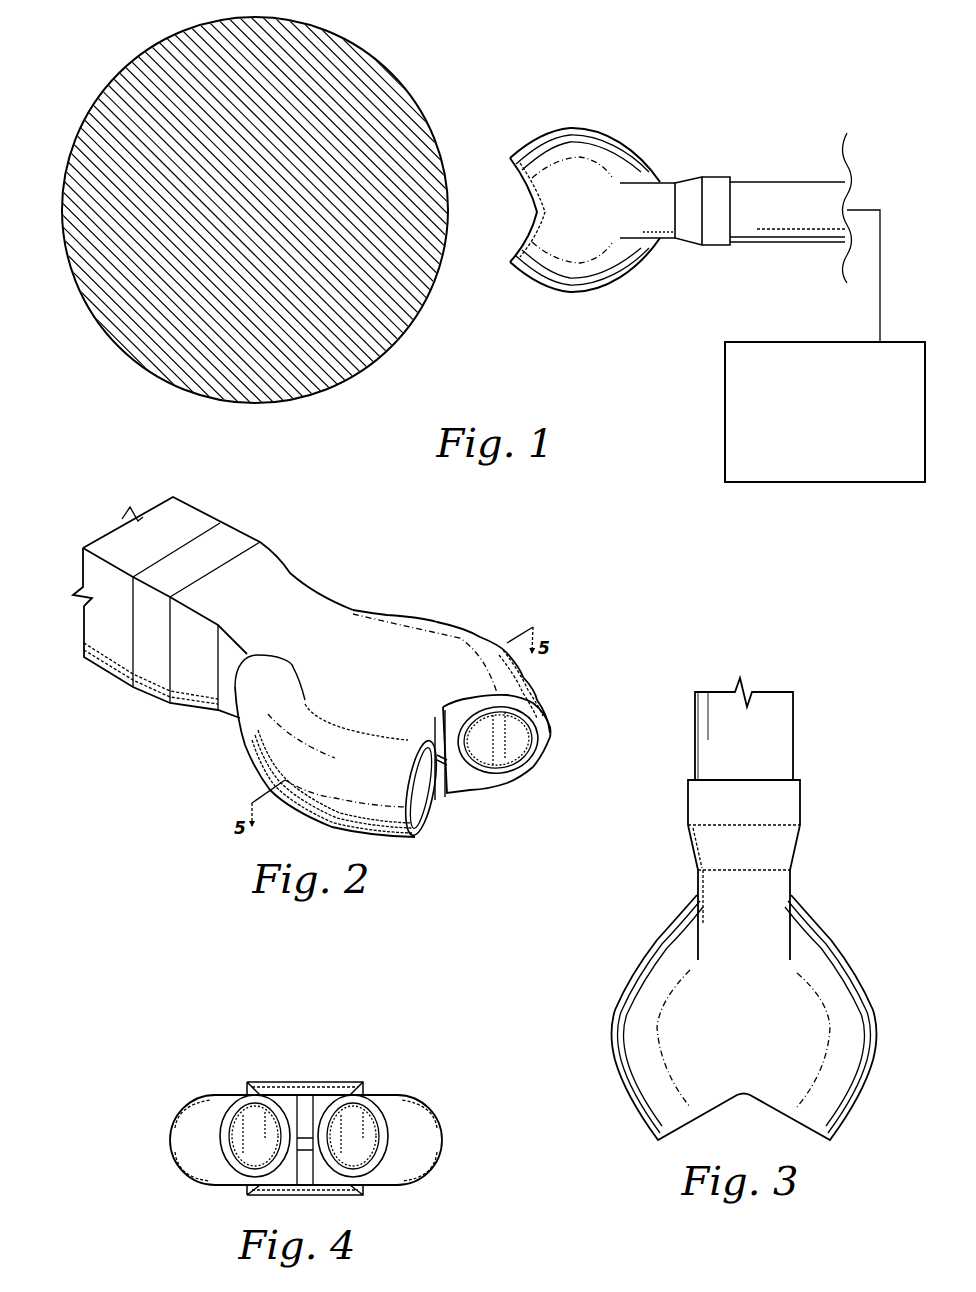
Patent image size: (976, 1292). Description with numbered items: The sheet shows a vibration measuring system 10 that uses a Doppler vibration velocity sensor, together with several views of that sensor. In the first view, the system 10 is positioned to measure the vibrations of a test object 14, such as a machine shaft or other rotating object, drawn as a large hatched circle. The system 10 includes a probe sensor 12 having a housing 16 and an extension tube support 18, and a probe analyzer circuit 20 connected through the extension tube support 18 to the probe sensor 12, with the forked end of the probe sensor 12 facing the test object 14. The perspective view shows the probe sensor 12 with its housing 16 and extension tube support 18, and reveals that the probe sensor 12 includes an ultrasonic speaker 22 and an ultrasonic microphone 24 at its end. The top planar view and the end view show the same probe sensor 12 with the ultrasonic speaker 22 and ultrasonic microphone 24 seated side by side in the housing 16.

In FIG. 1, the system 10 is at (712, 124).
In FIG. 1, the probe sensor 12 is at (610, 165).
In FIG. 2, the probe sensor 12 is at (396, 714).
In FIG. 3, the probe sensor 12 is at (635, 1015).
In FIG. 4, the probe sensor 12 is at (320, 1111).
In FIG. 1, the test object 14 is at (427, 100).
In FIG. 2, the housing 16 is at (423, 827).
In FIG. 4, the housing 16 is at (293, 1100).
In FIG. 1, the extension tube support 18 is at (762, 195).
In FIG. 2, the extension tube support 18 is at (187, 507).
In FIG. 3, the extension tube support 18 is at (775, 732).
In FIG. 1, the probe analyzer circuit 20 is at (737, 413).
In FIG. 2, the ultrasonic speaker 22 is at (520, 742).
In FIG. 4, the ultrasonic speaker 22 is at (365, 1118).
In FIG. 2, the ultrasonic microphone 24 is at (440, 800).
In FIG. 4, the ultrasonic microphone 24 is at (233, 1102).